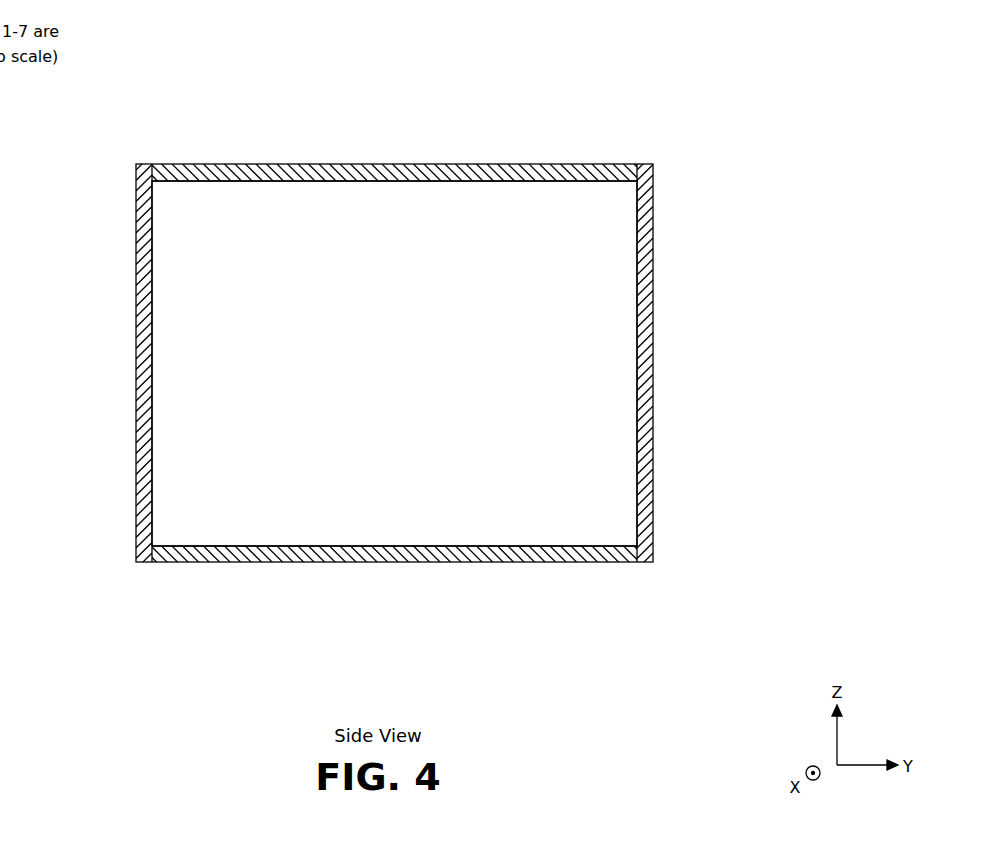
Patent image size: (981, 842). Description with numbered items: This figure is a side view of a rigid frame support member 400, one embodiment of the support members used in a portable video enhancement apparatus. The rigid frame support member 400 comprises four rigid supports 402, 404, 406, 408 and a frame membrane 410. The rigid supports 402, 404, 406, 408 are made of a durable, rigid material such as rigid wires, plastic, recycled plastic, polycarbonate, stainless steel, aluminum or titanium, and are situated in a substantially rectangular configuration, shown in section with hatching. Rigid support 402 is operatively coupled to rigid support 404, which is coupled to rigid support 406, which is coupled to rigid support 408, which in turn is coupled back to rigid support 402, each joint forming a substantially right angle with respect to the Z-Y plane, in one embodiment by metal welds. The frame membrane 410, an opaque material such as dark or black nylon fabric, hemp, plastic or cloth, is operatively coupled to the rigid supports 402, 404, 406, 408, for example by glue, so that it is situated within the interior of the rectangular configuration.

The rigid frame support member 400 is at (862, 75).
The rigid support 402 is at (447, 172).
The rigid support 404 is at (643, 352).
The rigid support 406 is at (348, 553).
The rigid support 408 is at (147, 351).
The frame membrane 410 is at (378, 333).